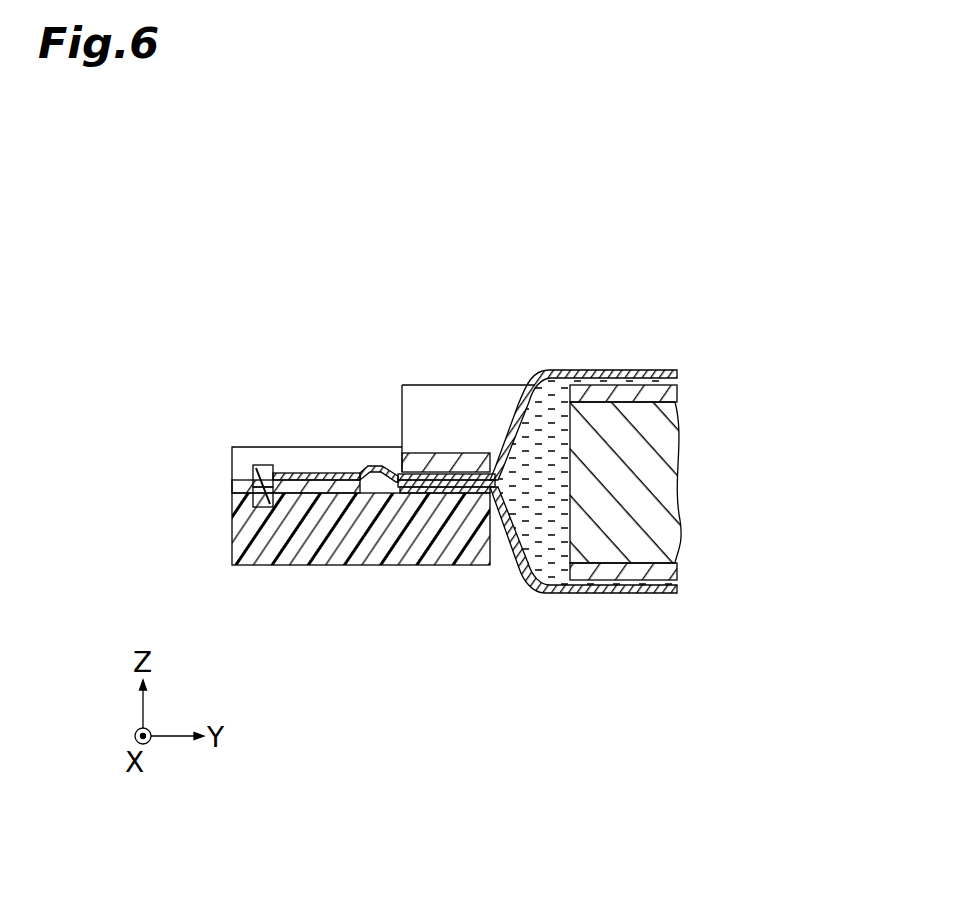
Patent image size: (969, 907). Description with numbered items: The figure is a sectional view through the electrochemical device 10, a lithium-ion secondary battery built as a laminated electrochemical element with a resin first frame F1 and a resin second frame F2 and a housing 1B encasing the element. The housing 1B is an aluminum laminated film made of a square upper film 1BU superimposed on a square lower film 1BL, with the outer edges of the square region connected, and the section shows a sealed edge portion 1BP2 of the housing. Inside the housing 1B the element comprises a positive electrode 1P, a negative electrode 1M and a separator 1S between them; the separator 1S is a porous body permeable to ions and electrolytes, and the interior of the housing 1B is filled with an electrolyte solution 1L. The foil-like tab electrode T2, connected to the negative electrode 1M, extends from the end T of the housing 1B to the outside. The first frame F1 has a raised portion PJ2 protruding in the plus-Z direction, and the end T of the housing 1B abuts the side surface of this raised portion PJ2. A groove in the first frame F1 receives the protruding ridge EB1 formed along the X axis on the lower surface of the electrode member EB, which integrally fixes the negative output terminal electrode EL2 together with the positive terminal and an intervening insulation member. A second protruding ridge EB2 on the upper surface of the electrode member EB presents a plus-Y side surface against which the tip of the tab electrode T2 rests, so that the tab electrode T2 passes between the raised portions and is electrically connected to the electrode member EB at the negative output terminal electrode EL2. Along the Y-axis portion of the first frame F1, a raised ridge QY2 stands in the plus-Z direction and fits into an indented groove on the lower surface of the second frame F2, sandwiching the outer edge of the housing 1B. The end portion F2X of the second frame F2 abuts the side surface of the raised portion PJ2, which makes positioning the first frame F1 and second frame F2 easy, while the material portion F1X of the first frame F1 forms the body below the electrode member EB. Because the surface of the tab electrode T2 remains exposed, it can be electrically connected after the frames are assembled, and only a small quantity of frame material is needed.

The electrochemical device 10 is at (657, 246).
The housing 1B is at (622, 358).
The upper film 1BU is at (657, 370).
The lower film 1BL is at (657, 590).
The sealed portion of exterior body 1BP2 is at (421, 505).
The electrolyte solution 1L is at (557, 400).
The positive electrode 1P is at (670, 390).
The separator 1S is at (670, 480).
The negative electrode 1M is at (668, 573).
The end of the housing T is at (386, 463).
The tab terminal electrode for a negative electrode T2 is at (340, 475).
The first frame F1 is at (383, 582).
The first frame member portion F1X is at (355, 548).
The second frame F2 is at (422, 372).
The portion of the end of the second frame F2X is at (463, 453).
The raised ridge QY2 is at (442, 383).
The raised portion PJ2 is at (297, 445).
The electrode member EB is at (233, 485).
The negative output terminal electrode EL2 is at (296, 486).
The protruding ridge EB1 is at (263, 507).
The protruding ridge EB2 is at (265, 470).